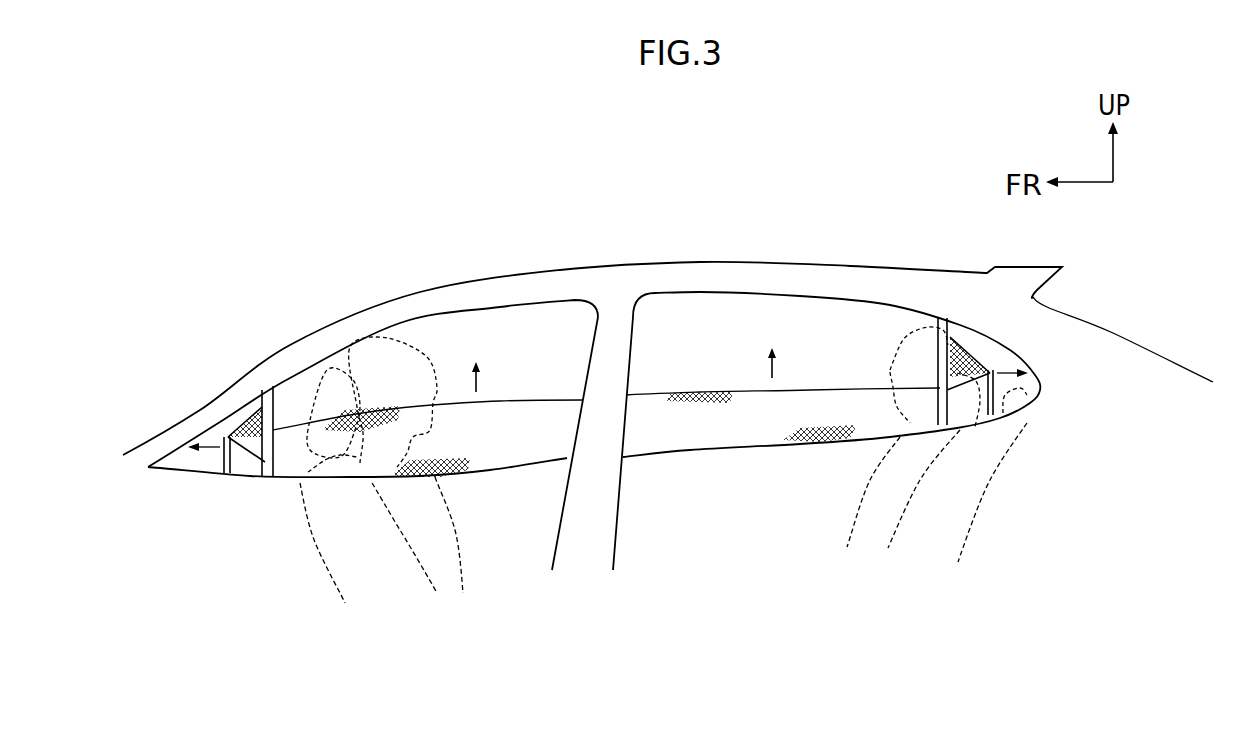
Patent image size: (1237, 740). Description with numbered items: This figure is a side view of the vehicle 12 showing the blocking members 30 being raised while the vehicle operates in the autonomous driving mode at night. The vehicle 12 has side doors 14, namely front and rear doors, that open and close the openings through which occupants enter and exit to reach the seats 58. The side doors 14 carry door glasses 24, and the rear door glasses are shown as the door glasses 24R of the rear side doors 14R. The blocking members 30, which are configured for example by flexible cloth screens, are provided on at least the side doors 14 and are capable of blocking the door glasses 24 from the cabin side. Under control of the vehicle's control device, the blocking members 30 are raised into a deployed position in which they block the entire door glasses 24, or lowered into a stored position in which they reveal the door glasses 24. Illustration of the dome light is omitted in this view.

The vehicle 12 is at (849, 260).
The side doors 14 is at (508, 556).
The rear side door 14R is at (654, 562).
The door glasses 24 is at (522, 333).
The door glasses of rear side doors 24R is at (668, 315).
The blocking members 30 is at (462, 413).
The seats 58 is at (312, 540).